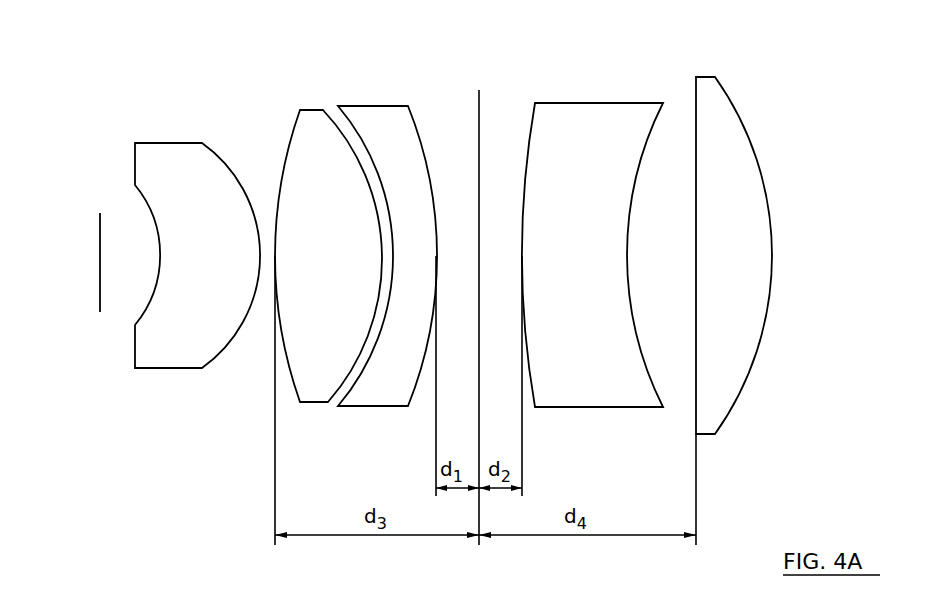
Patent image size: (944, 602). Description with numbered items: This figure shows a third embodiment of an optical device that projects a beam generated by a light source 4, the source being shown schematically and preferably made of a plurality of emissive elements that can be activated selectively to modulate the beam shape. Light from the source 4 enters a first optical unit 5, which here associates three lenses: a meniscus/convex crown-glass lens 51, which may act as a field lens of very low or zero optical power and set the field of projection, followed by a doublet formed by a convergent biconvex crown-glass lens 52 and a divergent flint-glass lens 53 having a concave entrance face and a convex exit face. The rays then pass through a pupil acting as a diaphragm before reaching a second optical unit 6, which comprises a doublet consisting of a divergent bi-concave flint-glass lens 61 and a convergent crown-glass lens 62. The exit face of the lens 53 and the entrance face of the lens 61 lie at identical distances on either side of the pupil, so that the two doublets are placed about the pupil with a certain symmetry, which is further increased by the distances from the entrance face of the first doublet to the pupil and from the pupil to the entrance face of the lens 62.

The light source 4 is at (100, 306).
The first optical unit 5 is at (442, 55).
The second optical unit 6 is at (765, 55).
The lens 51 is at (152, 356).
The lens 52 is at (315, 392).
The lens 53 is at (400, 398).
The lens 61 is at (592, 397).
The second lens 62 is at (702, 422).